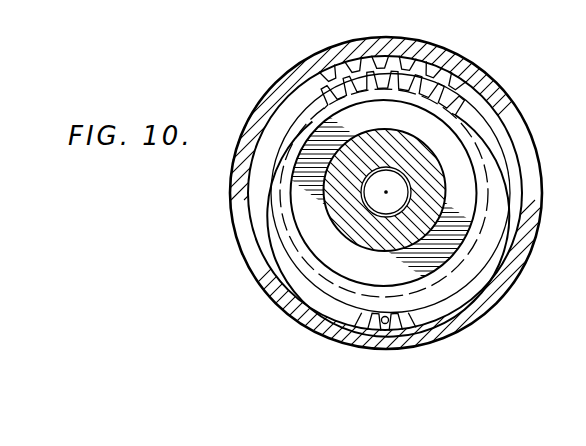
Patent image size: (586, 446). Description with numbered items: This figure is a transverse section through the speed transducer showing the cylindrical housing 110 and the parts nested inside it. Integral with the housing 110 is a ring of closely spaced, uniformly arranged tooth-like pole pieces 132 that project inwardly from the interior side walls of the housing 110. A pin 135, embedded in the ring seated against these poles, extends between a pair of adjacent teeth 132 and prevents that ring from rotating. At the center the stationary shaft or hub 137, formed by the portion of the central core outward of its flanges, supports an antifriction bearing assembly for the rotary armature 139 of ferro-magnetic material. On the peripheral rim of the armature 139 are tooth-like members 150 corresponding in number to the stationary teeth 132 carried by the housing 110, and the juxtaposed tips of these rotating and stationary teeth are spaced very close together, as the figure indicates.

The housing 110 is at (478, 72).
The tooth-like pole pieces 132 is at (444, 65).
The pin 135 is at (383, 324).
The stationary shaft or hub 137 is at (377, 203).
The rotary armature 139 is at (445, 133).
The tooth-like members 150 is at (392, 97).